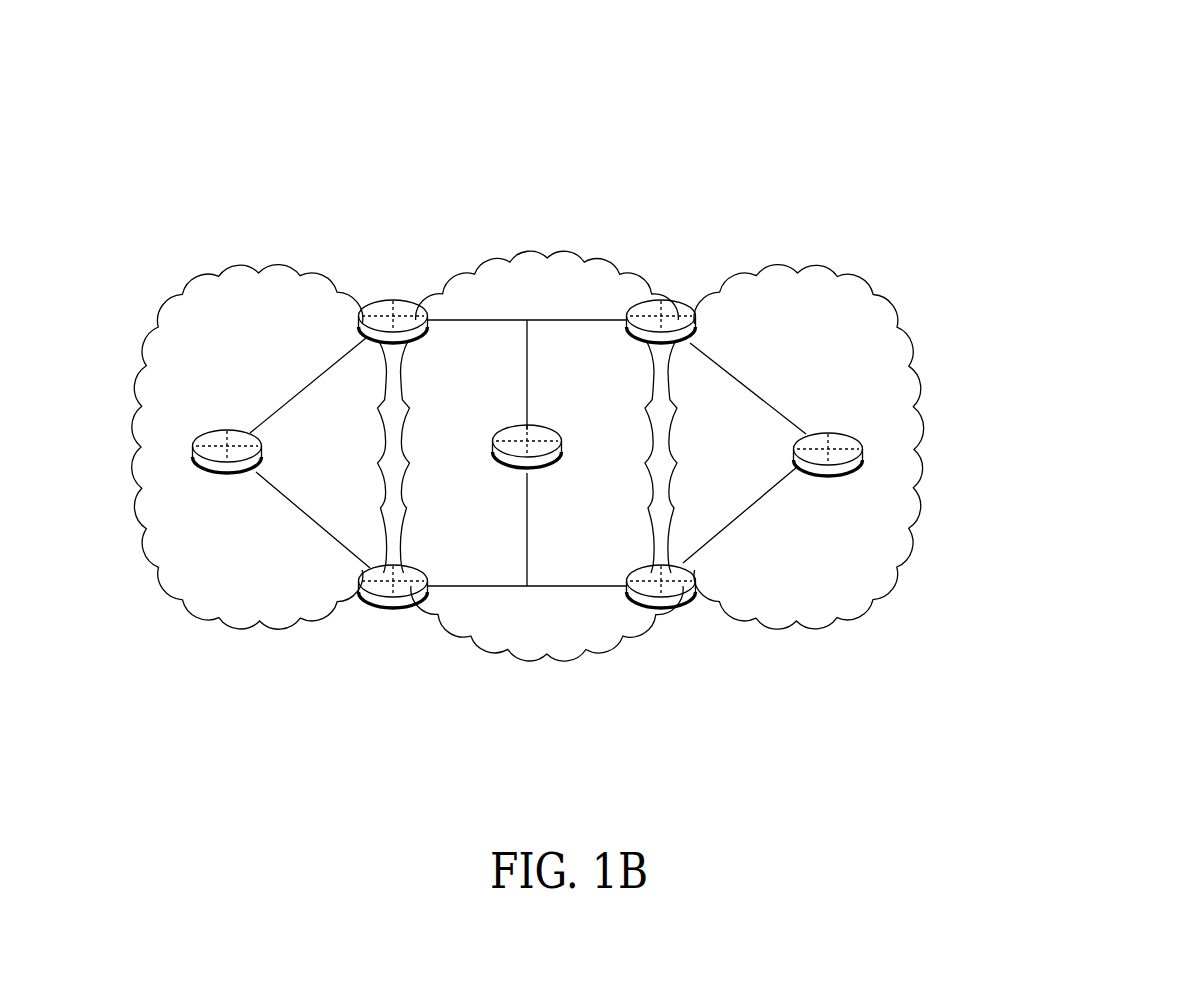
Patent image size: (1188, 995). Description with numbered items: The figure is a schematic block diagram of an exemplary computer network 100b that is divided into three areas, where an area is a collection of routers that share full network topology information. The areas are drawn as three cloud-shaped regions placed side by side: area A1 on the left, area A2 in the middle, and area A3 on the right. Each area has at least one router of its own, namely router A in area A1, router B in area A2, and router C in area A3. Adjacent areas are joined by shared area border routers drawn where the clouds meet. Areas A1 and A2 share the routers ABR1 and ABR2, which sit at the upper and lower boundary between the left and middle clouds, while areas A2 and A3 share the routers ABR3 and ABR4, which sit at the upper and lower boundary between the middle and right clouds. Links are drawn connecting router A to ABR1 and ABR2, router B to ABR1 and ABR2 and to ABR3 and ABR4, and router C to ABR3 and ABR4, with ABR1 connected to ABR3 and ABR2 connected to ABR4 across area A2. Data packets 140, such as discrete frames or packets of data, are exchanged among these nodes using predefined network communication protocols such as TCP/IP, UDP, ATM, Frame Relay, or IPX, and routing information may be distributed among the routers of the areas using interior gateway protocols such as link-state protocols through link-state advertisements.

The computer network 100b is at (1091, 57).
The data packets 140 is at (336, 320).
The area A1 is at (247, 447).
The area A2 is at (531, 456).
The area A3 is at (809, 447).
The router ABR1* ABR1 is at (395, 292).
The router ABR2* ABR2 is at (386, 610).
The router ABR3* ABR3 is at (660, 292).
The router ABR4* ABR4 is at (667, 610).
The router A is at (213, 453).
The router B is at (514, 451).
The router C is at (840, 455).